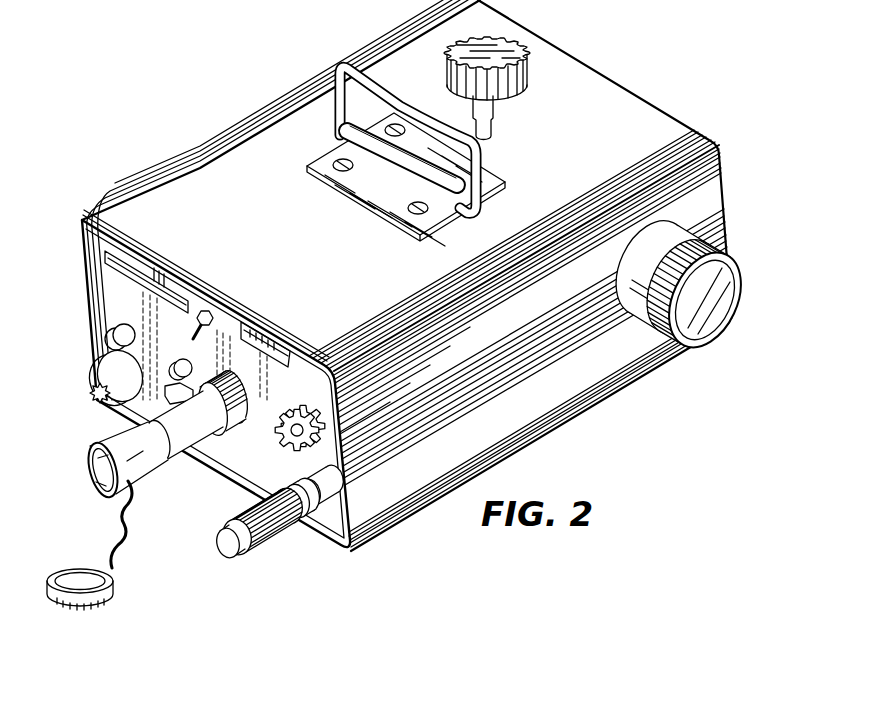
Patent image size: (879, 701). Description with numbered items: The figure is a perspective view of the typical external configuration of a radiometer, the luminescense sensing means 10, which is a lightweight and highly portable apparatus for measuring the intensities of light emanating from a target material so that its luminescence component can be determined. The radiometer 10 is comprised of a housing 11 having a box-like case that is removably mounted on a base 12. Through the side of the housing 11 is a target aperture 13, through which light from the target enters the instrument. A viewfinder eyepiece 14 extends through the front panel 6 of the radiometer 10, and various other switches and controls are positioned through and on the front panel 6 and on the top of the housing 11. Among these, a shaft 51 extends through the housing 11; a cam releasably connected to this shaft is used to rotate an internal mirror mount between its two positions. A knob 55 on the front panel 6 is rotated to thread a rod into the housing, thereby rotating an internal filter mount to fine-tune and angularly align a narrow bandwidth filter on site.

The luminescense sensing means 10 is at (193, 134).
The housing 11 is at (111, 201).
The base 12 is at (560, 418).
The target aperture 13 is at (740, 264).
The viewfinder eyepiece 14 is at (110, 437).
The shaft 51 is at (497, 122).
The front panel 6 is at (290, 452).
The knob 55 is at (258, 552).